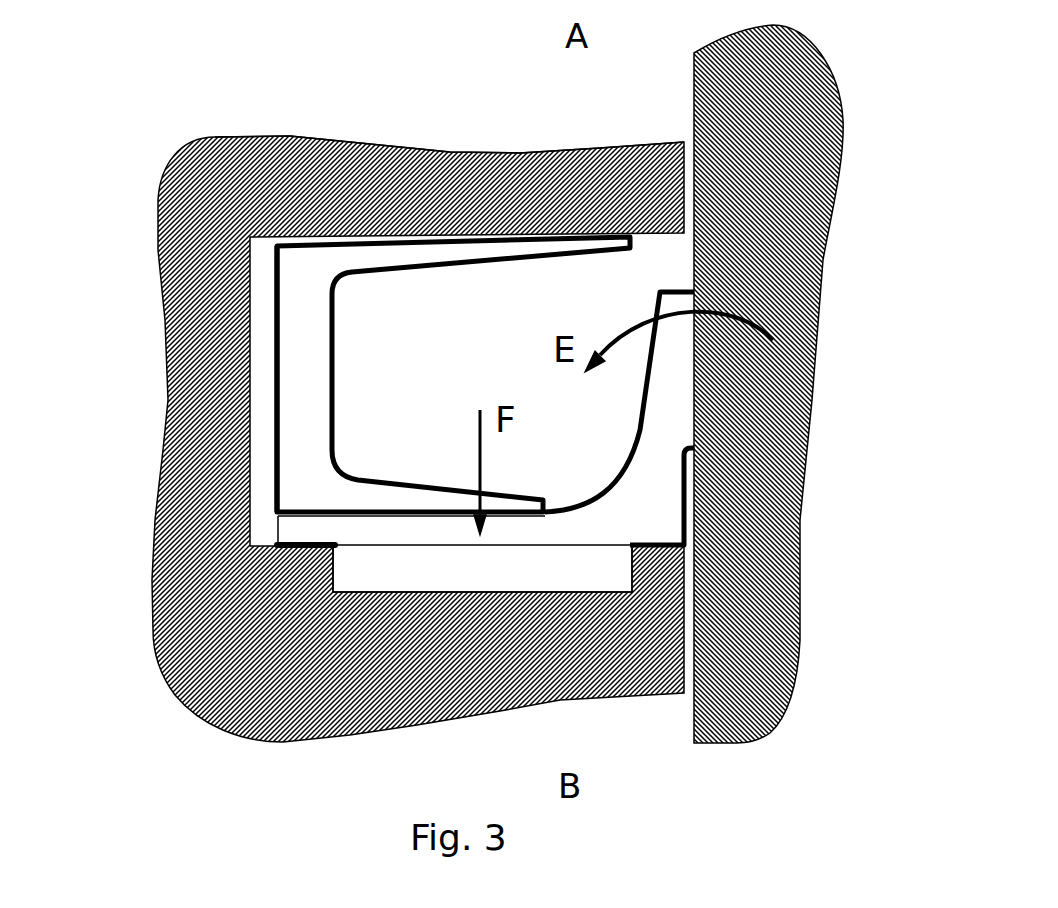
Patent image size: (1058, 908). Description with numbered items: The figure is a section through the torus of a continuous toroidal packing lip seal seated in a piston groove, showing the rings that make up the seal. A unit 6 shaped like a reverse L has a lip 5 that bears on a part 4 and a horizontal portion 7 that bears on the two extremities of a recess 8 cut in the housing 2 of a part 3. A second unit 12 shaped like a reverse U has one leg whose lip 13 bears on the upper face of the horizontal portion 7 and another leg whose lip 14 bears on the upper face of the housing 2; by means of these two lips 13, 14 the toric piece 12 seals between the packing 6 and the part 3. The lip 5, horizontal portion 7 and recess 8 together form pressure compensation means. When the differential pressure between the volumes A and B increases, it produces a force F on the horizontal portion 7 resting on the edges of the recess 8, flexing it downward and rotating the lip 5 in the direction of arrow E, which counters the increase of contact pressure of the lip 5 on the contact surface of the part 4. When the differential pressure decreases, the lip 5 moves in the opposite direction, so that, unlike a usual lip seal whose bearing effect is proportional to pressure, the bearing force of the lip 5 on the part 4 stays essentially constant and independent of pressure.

The housing 2 is at (262, 293).
The part 3 is at (565, 153).
The part 4 is at (842, 165).
The lip 5 is at (675, 347).
The unit 6 is at (687, 498).
The horizontal portion 7 is at (447, 533).
The recess 8 is at (513, 572).
The unit 12 is at (276, 395).
The lip 13 is at (447, 502).
The lip 14 is at (543, 243).